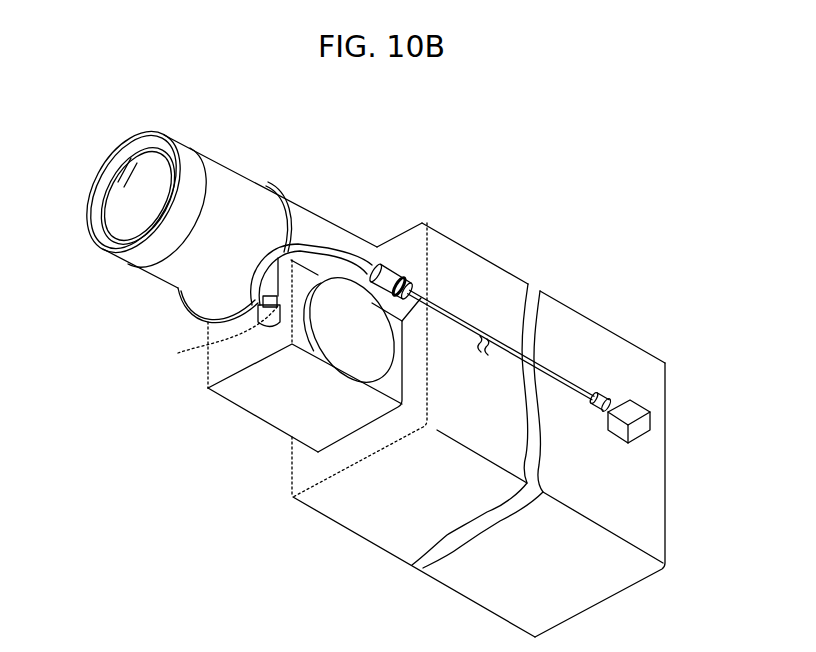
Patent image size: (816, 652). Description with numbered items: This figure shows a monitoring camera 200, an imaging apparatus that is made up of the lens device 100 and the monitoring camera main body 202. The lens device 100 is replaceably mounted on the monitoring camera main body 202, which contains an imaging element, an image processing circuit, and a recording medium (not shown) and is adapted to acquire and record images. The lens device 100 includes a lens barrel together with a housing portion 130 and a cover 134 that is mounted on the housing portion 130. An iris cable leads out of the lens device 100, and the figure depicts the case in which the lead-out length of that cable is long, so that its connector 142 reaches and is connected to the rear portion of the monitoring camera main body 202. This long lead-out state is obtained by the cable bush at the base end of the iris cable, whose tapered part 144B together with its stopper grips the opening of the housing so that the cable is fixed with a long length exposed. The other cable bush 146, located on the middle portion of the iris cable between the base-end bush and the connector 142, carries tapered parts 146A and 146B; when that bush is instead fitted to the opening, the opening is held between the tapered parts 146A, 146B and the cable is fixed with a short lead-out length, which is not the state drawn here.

The lens device 100 is at (121, 318).
The housing portion 130 is at (197, 398).
The cover 134 is at (262, 421).
The connector 142 is at (645, 393).
The tapered part 144B is at (254, 322).
The cable bush 146 is at (401, 246).
The tapered part 146A is at (385, 260).
The tapered part 146B is at (427, 268).
The monitoring camera 200 is at (149, 523).
The monitoring camera main body 202 is at (333, 521).